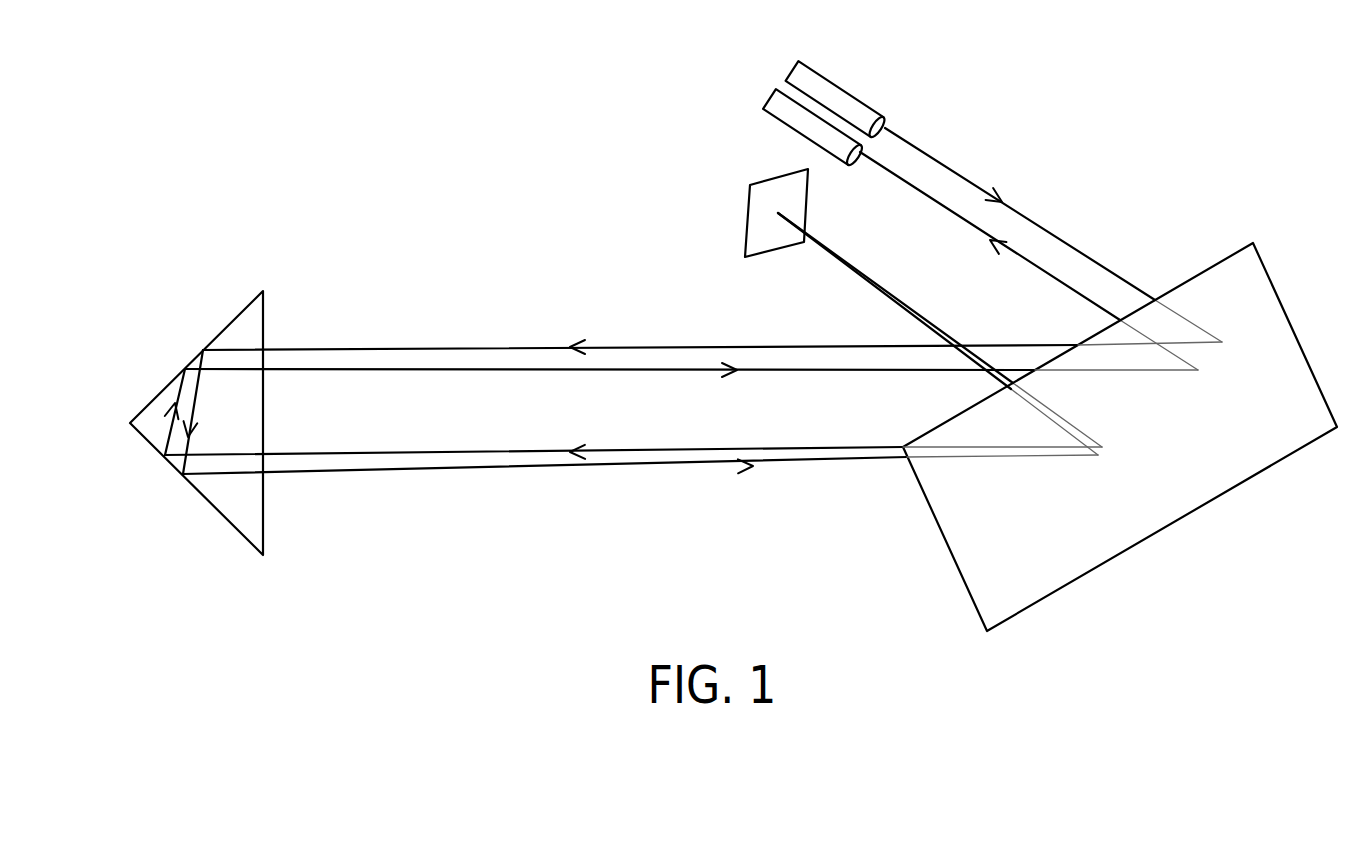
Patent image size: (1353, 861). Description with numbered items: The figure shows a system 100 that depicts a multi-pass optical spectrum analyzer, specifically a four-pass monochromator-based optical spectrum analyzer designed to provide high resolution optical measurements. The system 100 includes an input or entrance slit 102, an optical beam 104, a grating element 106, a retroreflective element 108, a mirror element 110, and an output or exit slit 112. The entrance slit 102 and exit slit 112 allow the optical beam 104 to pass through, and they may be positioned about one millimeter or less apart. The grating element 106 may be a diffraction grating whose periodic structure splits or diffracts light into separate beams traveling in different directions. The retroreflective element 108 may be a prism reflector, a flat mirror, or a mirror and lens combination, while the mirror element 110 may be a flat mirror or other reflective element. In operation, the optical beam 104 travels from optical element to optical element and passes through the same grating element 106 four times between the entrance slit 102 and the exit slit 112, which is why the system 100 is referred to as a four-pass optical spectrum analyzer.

The system 100 is at (414, 137).
The input or entrance slit 102 is at (823, 70).
The optical beam 104 is at (1020, 212).
The grating element 106 is at (1263, 262).
The retroreflective element 108 is at (225, 323).
The mirror element 110 is at (744, 224).
The output or exit slit 112 is at (762, 102).